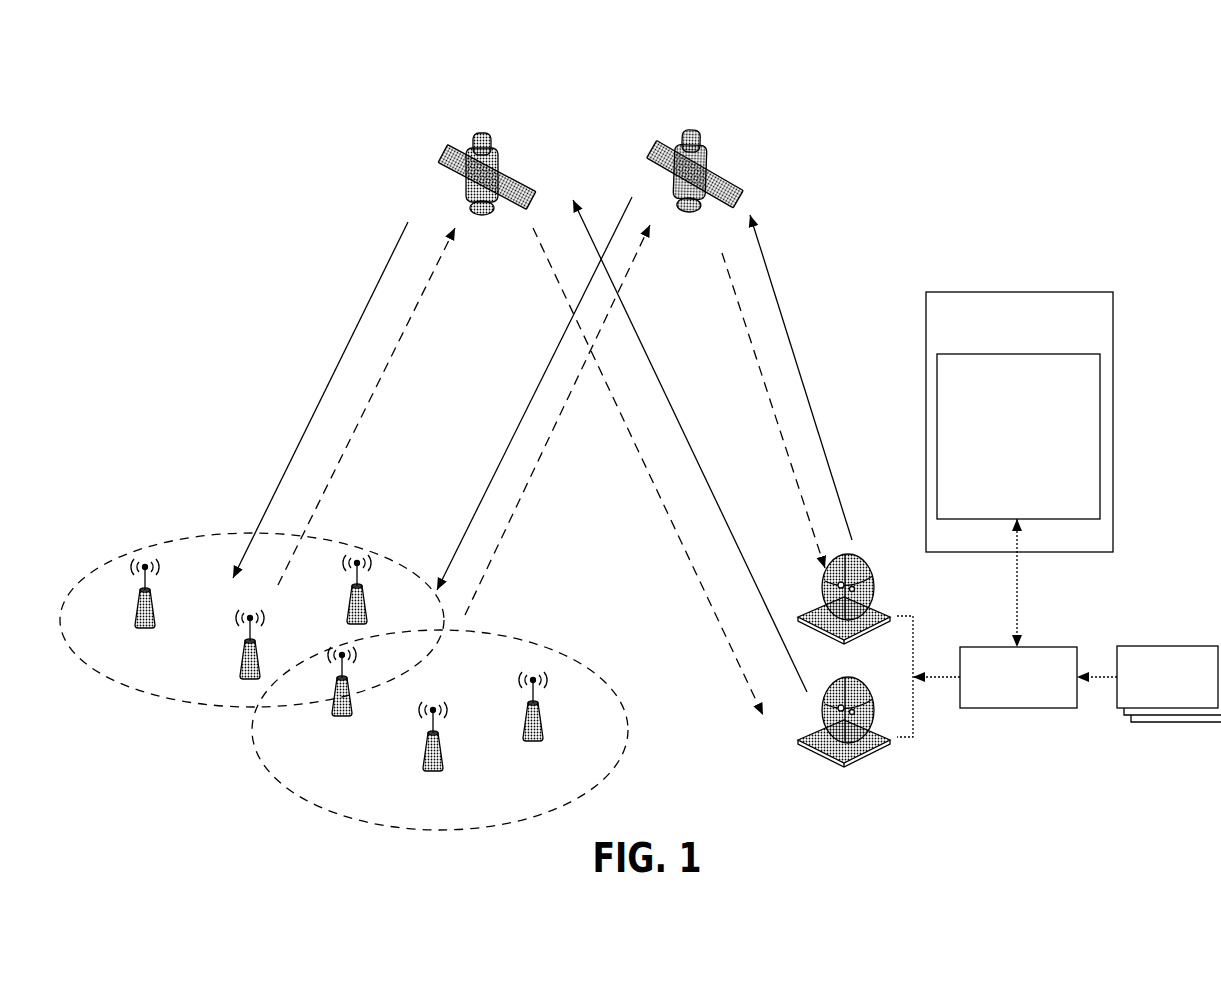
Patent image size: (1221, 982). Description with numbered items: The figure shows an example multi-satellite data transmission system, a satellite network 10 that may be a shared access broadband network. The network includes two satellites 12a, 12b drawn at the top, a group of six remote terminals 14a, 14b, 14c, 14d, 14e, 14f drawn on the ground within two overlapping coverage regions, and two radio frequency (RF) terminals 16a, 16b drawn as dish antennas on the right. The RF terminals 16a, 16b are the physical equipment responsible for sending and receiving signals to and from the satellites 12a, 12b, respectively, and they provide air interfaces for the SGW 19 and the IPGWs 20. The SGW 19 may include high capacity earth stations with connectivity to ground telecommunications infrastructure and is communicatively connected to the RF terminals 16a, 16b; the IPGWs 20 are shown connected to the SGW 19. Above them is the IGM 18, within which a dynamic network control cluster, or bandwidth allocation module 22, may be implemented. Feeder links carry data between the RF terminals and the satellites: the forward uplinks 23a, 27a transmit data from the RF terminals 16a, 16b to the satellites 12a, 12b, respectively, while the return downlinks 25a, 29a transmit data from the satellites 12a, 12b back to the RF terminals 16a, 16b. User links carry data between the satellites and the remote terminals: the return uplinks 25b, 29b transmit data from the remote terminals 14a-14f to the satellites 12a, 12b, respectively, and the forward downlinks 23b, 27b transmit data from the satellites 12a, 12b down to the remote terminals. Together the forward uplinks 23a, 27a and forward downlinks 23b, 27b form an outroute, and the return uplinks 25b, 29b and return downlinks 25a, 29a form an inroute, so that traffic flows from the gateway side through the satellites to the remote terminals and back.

The satellite network 10 is at (598, 96).
The satellite 12a is at (518, 178).
The satellite 12b is at (722, 168).
The remote terminal 14a is at (144, 611).
The remote terminal 14b is at (230, 648).
The remote terminal 14c is at (338, 590).
The remote terminal 14d is at (338, 697).
The remote terminal 14e is at (429, 752).
The remote terminal 14f is at (527, 721).
The radio frequency (RF) terminal 16a is at (880, 612).
The radio frequency (RF) terminal 16b is at (816, 751).
The IGM 18 is at (1019, 422).
The SGW 19 is at (1018, 677).
The IPGWs 20 is at (1169, 684).
The bandwidth allocation module 22 is at (1018, 436).
The forward uplink 23a is at (690, 446).
The forward downlink 23b is at (320, 400).
The return downlink 25a is at (648, 471).
The return uplink 25b is at (366, 406).
The forward uplink 27a is at (801, 377).
The forward downlink 27b is at (534, 393).
The return downlink 29a is at (773, 410).
The return uplink 29b is at (557, 420).